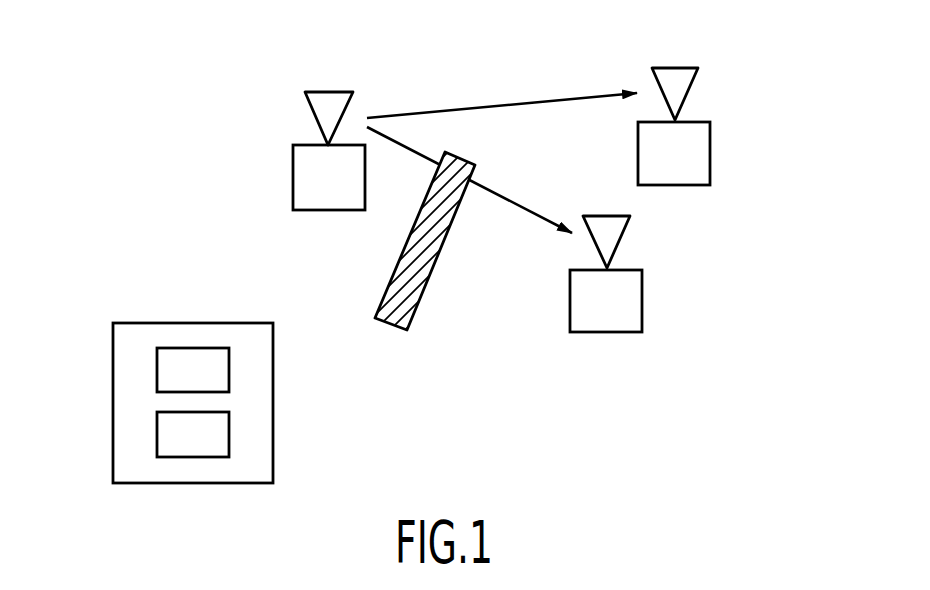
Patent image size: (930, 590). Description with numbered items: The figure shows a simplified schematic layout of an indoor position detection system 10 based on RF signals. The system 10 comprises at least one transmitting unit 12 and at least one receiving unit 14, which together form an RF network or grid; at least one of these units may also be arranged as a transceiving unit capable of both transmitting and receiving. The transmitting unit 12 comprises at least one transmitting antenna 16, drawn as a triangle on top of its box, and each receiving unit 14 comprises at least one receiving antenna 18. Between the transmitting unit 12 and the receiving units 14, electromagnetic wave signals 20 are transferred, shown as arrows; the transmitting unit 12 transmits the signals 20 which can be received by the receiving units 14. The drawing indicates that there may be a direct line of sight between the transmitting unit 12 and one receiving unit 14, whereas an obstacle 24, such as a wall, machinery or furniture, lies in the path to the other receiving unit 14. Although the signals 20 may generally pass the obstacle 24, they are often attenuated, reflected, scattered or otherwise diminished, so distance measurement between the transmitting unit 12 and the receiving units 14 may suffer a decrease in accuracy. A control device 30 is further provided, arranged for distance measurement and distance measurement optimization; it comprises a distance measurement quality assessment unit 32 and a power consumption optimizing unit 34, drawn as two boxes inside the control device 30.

The indoor position detection system 10 is at (208, 95).
The transmitting unit 12 is at (293, 175).
The receiving unit 14 is at (710, 152).
The transmitting antenna 16 is at (313, 113).
The receiving antenna 18 is at (693, 88).
The electromagnetic wave signals 20 is at (558, 100).
The obstacle 24 is at (445, 247).
The control device 30 is at (275, 403).
The distance measurement quality assessment unit 32 is at (157, 368).
The power consumption optimizing unit 34 is at (157, 433).